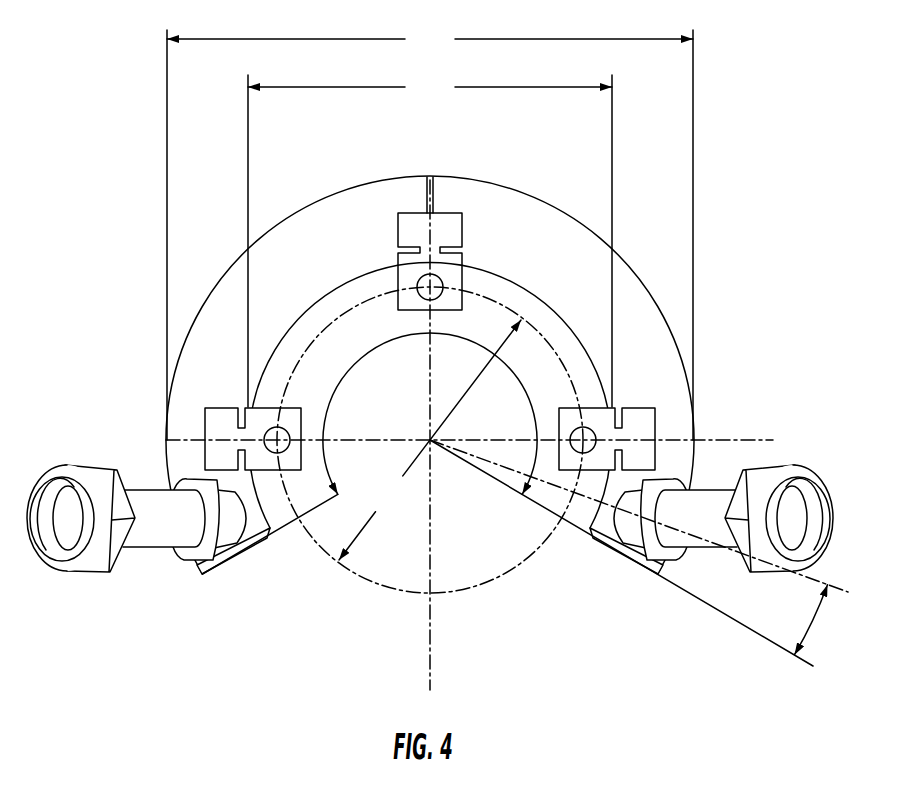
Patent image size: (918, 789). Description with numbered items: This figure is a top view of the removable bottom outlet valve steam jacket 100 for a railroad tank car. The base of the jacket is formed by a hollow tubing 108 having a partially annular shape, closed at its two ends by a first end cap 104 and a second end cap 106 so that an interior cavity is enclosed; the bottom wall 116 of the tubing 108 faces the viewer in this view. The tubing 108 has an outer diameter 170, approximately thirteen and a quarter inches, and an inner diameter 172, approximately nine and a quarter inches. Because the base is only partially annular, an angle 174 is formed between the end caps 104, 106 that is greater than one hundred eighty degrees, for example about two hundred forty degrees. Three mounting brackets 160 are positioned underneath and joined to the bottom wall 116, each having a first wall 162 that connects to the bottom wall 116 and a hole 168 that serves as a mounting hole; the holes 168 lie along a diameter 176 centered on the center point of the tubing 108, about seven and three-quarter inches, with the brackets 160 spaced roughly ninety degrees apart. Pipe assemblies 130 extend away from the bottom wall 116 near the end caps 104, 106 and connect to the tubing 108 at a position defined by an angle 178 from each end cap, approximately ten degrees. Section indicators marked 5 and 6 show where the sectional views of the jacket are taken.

The BOV steam jacket 100 is at (665, 235).
The first end cap 104 is at (632, 558).
The second end cap 106 is at (220, 565).
The hollow tubing 108 is at (298, 213).
The bottom wall 116 is at (212, 305).
The pipe assemblies 130 is at (140, 538).
The mounting brackets 160 is at (447, 213).
The first wall 162 is at (227, 418).
The hole 168 is at (593, 428).
The outer diameter 170 is at (430, 231).
The inner diameter 172 is at (430, 240).
The angle 174 is at (339, 500).
The diameter 176 is at (430, 440).
The angle 178 is at (835, 575).
The section line 5 is at (512, 437).
The section line 6 is at (436, 426).